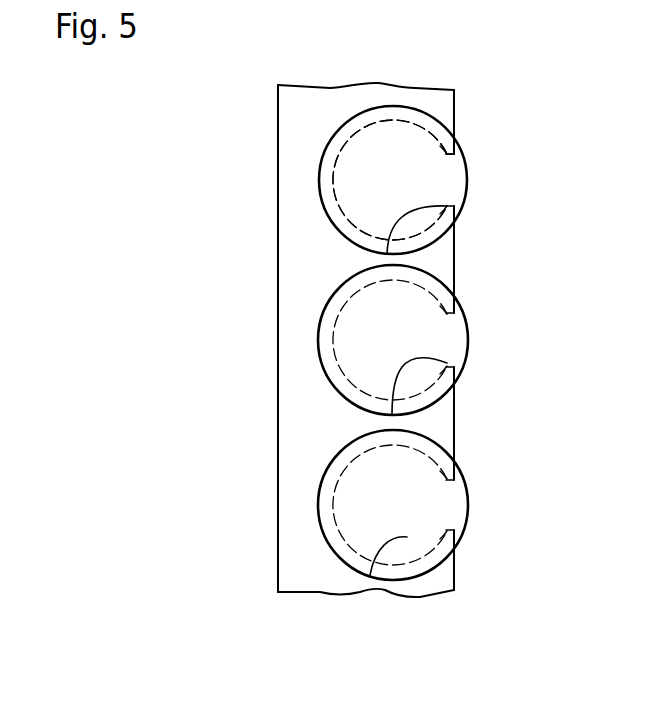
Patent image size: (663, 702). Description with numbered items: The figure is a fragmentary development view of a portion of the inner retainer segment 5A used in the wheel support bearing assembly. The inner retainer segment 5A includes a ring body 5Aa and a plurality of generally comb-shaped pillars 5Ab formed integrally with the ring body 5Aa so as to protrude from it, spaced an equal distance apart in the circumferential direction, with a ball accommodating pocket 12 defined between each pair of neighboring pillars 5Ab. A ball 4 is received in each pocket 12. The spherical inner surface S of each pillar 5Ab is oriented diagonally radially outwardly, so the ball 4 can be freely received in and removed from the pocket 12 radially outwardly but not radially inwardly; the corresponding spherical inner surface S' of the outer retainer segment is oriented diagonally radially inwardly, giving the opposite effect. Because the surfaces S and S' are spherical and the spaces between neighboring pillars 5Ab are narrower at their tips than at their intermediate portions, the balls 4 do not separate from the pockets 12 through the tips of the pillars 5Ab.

The inner retainer segment 5A is at (252, 293).
The ring body 5Aa is at (287, 340).
The pillar 5Ab is at (432, 260).
The ball 4 is at (460, 173).
The ball accommodating pocket 12 is at (447, 206).
The spherical inner surface S is at (383, 88).
The spherical inner surface S' is at (401, 138).